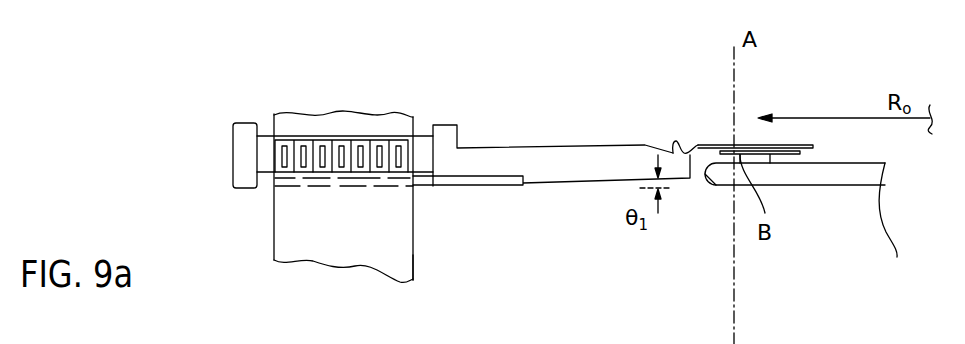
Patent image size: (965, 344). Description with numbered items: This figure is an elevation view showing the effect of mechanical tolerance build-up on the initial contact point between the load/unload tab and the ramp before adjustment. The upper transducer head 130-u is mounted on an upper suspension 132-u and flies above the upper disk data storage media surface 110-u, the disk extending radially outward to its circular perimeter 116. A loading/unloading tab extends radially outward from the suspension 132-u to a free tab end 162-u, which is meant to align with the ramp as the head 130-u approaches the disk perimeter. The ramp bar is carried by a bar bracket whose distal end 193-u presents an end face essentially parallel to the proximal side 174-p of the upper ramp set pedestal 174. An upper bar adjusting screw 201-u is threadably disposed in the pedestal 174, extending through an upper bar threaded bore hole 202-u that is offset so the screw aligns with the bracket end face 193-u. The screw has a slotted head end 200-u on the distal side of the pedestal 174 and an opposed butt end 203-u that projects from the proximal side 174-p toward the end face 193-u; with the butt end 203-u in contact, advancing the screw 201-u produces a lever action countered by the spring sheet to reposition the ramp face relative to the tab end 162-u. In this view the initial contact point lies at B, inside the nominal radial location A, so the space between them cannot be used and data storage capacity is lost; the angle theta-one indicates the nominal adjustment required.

The slotted head end 200-u is at (232, 130).
The upper bar adjusting screw 201-u is at (264, 150).
The upper bar threaded bore hole 202-u is at (338, 173).
The butt end 203-u is at (425, 177).
The upper ramp set pedestal 174 is at (344, 118).
The proximal side of pedestal 174-p is at (413, 263).
The distal end of bar bracket 193-u is at (435, 142).
The free tab end 162-u is at (684, 141).
The upper suspension 132-u is at (787, 144).
The upper transducer head 130-u is at (770, 155).
The upper disk data storage media surface 110-u is at (831, 162).
The circular perimeter 116 is at (704, 188).